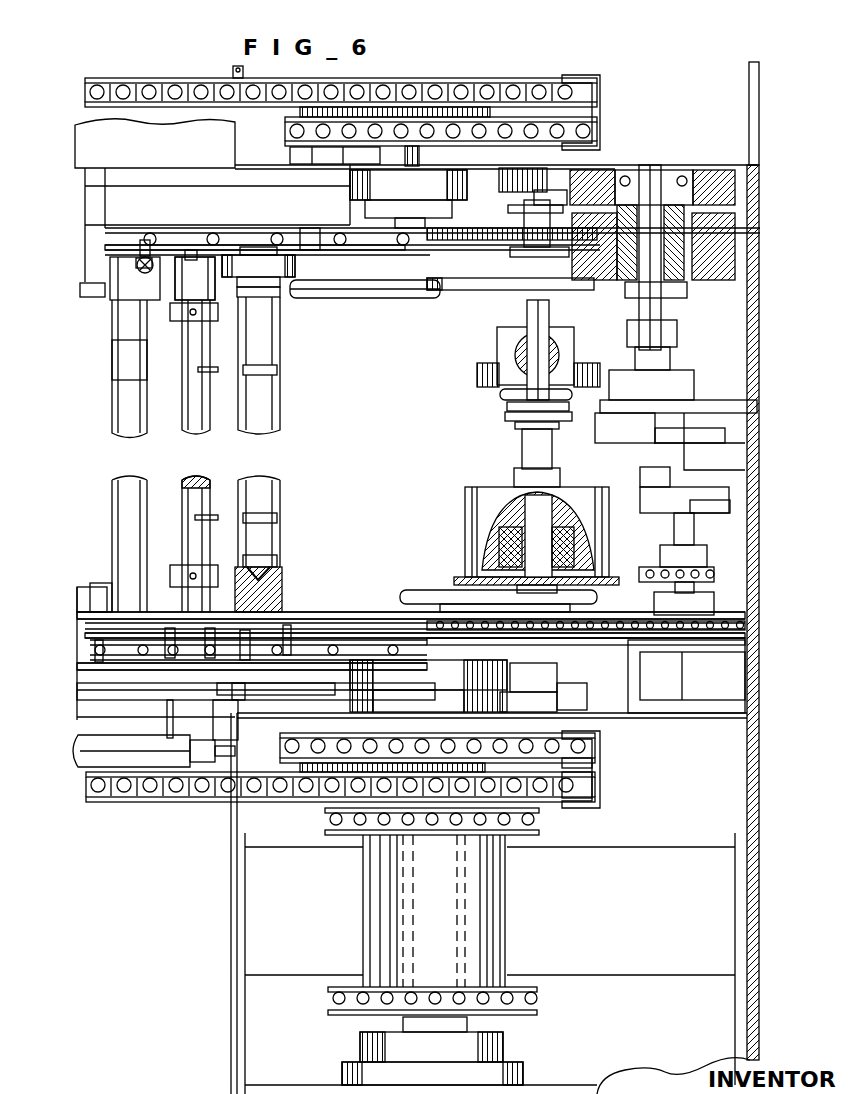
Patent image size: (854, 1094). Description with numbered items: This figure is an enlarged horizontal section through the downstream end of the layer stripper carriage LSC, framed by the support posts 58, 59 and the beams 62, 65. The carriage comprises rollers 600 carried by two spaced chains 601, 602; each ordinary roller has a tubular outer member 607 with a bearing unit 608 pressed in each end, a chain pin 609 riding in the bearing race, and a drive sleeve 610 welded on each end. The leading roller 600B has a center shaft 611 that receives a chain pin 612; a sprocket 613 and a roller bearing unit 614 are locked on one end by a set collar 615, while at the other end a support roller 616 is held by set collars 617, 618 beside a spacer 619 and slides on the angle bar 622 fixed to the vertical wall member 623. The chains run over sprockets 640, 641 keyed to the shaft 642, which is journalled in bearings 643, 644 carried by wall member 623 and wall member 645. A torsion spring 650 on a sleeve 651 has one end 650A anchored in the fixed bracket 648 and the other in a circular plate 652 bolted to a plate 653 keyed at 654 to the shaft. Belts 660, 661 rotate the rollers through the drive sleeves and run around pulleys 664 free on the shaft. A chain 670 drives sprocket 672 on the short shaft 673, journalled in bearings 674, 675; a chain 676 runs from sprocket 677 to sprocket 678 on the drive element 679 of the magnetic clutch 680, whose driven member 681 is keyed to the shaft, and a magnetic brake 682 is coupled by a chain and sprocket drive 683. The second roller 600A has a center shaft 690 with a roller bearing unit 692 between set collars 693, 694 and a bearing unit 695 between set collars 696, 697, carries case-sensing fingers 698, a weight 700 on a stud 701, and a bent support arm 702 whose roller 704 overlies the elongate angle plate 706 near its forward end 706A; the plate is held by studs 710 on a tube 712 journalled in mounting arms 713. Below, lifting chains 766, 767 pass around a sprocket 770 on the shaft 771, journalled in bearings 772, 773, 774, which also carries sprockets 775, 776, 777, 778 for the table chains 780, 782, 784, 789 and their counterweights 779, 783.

The support post 58 is at (232, 1043).
The support post 59 is at (749, 129).
The box beam 62 is at (90, 716).
The beam 65 is at (90, 131).
The layer stripper carriage LSC is at (120, 364).
The rollers 600 is at (117, 431).
The second roller 600A is at (212, 476).
The leading roller 600B is at (271, 397).
The chain 601 is at (310, 232).
The chain 602 is at (100, 651).
The tubular outer member 607 is at (118, 477).
The bearing unit 608 is at (108, 254).
The pin 609 is at (96, 652).
The drive sleeve 610 is at (110, 270).
The center shaft 611 is at (274, 369).
The pin 612 is at (246, 635).
The sprocket 613 is at (288, 629).
The roller bearing unit 614 is at (282, 593).
The set collar 615 is at (282, 567).
The support roller 616 is at (296, 266).
The set collar 617 is at (258, 256).
The set collar 618 is at (283, 320).
The spacer 619 is at (281, 306).
The angle bar 622 is at (415, 275).
The vertical wall member 623 is at (678, 166).
The sprocket 640 is at (514, 248).
The sprocket 641 is at (573, 658).
The shaft 642 is at (527, 461).
The bearing 643 is at (553, 178).
The bearing 644 is at (560, 695).
The vertical wall member 645 is at (675, 716).
The fixed bracket 648 is at (684, 430).
The torsion spring 650 is at (512, 423).
The spring end 650A is at (660, 438).
The sleeve 651 is at (515, 437).
The circular plate 652 is at (505, 411).
The plate 653 is at (495, 385).
The key 654 is at (576, 341).
The belt 660 is at (88, 302).
The belt 661 is at (81, 601).
The pulley 664 is at (515, 281).
The endless chain 670 is at (744, 643).
The sprocket 672 is at (737, 620).
The short shaft 673 is at (675, 527).
The bearing 674 is at (717, 612).
The bearing 675 is at (687, 494).
The chain 676 is at (644, 565).
The sprocket 677 is at (705, 563).
The sprocket 678 is at (485, 565).
The drive element 679 is at (477, 548).
The magnetic clutch 680 is at (459, 493).
The driven member 681 is at (474, 523).
The magnetic brake 682 is at (737, 243).
The chain and sprocket drive 683 is at (679, 303).
The center shaft 690 is at (192, 473).
The roller bearing unit 692 is at (187, 298).
The set collar 693 is at (187, 255).
The set collar 694 is at (170, 314).
The bearing unit 695 is at (172, 640).
The set collar 696 is at (173, 577).
The set collar 697 is at (213, 645).
The case-sensing fingers 698 is at (213, 373).
The weight 700 is at (143, 238).
The stud 701 is at (145, 258).
The bent support arm 702 is at (218, 684).
The roller 704 is at (243, 712).
The elongate angle plate 706 is at (83, 689).
The forward end 706A is at (307, 692).
The studs 710 is at (172, 708).
The tube 712 is at (85, 768).
The mounting arms 713 is at (207, 756).
The chain 766 is at (537, 994).
The chain 767 is at (537, 829).
The sprocket 770 is at (350, 829).
The shaft 771 is at (405, 156).
The bearing 772 is at (452, 1078).
The bearing 773 is at (450, 692).
The bearing 774 is at (448, 197).
The sprocket 775 is at (340, 793).
The sprocket 776 is at (477, 741).
The sprocket 777 is at (352, 146).
The sprocket 778 is at (476, 100).
The counterweight 779 is at (594, 766).
The chain 780 is at (595, 738).
The chain 782 is at (597, 122).
The counterweight 783 is at (594, 80).
The chain 784 is at (597, 98).
The chain 789 is at (595, 781).